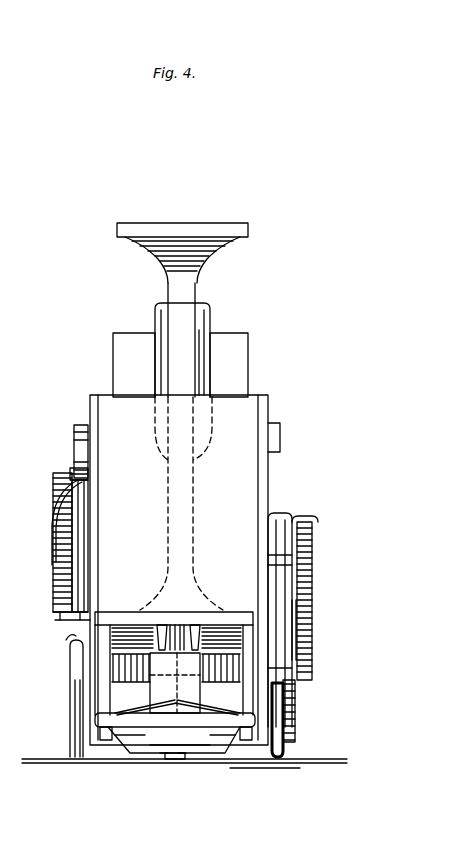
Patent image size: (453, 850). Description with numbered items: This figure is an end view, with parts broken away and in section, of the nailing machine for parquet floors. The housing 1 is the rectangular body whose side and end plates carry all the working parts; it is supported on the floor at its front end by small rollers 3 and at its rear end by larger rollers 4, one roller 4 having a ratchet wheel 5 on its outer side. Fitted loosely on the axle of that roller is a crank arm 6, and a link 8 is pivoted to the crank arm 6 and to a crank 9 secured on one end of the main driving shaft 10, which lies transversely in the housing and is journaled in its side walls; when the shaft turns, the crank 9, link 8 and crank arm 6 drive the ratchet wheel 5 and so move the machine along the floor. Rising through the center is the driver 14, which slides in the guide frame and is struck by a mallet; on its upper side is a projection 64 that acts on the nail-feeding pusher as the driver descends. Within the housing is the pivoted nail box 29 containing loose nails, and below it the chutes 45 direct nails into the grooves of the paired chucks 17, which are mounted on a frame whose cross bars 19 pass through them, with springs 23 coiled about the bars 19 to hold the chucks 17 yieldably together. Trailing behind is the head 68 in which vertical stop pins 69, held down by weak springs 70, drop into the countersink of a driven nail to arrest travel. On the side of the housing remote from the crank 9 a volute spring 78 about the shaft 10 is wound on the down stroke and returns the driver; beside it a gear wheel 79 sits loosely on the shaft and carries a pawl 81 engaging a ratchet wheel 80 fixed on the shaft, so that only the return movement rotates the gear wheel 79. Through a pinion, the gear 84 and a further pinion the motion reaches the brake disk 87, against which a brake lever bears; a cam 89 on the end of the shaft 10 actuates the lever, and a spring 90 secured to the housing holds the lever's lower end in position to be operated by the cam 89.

The housing 1 is at (263, 406).
The driver 14 is at (212, 234).
The projection 64 is at (206, 332).
The nail box 29 is at (304, 657).
The brake disk 87 is at (74, 448).
The spring 90 is at (74, 474).
The gear 84 is at (46, 522).
The pawl 81 is at (57, 536).
The cam 89 is at (56, 557).
The ratchet wheel 80 is at (60, 602).
The gear wheel 79 is at (64, 620).
The spring 78 is at (68, 638).
The cross bars 19 is at (86, 684).
The rollers 3 is at (64, 763).
The main driving shaft 10 is at (273, 555).
The crank 9 is at (294, 523).
The link 8 is at (311, 580).
The crank arm 6 is at (300, 607).
The rollers 4 is at (277, 622).
The ratchet wheel 5 is at (272, 672).
The chutes 45 is at (162, 632).
The springs 23 is at (115, 692).
The chucks 17 is at (150, 690).
The springs 70 is at (170, 713).
The head 68 is at (168, 750).
The stop pins 69 is at (186, 756).